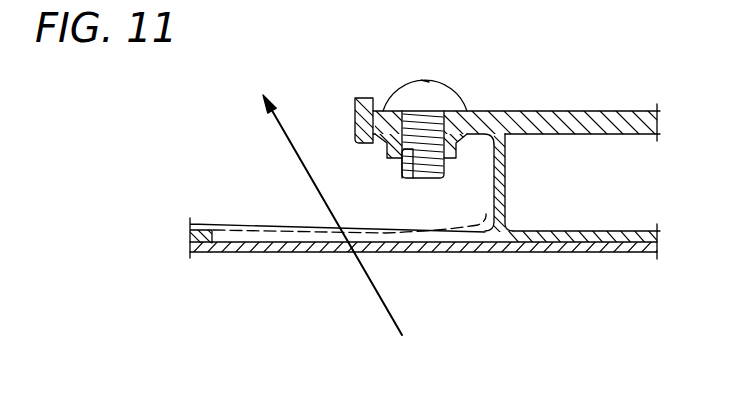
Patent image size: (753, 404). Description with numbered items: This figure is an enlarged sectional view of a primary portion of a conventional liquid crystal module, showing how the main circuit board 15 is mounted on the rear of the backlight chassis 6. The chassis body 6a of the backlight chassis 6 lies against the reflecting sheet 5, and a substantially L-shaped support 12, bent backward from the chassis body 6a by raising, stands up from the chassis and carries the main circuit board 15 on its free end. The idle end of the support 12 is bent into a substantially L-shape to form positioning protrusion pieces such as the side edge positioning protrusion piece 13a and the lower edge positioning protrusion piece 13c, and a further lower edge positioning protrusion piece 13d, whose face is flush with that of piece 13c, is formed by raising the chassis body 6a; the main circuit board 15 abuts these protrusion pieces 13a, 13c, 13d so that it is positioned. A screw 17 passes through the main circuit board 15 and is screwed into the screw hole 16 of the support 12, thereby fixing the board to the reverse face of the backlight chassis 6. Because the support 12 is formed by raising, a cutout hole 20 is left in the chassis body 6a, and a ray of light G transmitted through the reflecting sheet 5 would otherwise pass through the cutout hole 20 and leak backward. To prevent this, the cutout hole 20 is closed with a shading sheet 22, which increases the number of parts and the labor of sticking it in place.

The reflecting sheet 5 is at (434, 246).
The chassis body 6a is at (584, 225).
The backlight chassis 6 is at (580, 233).
The substantially L-shaped support 12 is at (506, 194).
The side edge positioning protrusion piece 13a is at (435, 91).
The lower edge positioning protrusion piece 13c is at (435, 91).
The lower edge positioning protrusion piece 13d is at (362, 97).
The main circuit board 15 is at (588, 113).
The screw hole 16 is at (403, 180).
The screw 17 is at (462, 104).
The cutout hole 20 is at (297, 244).
The shading sheet 22 is at (293, 224).
The ray of light G is at (341, 234).